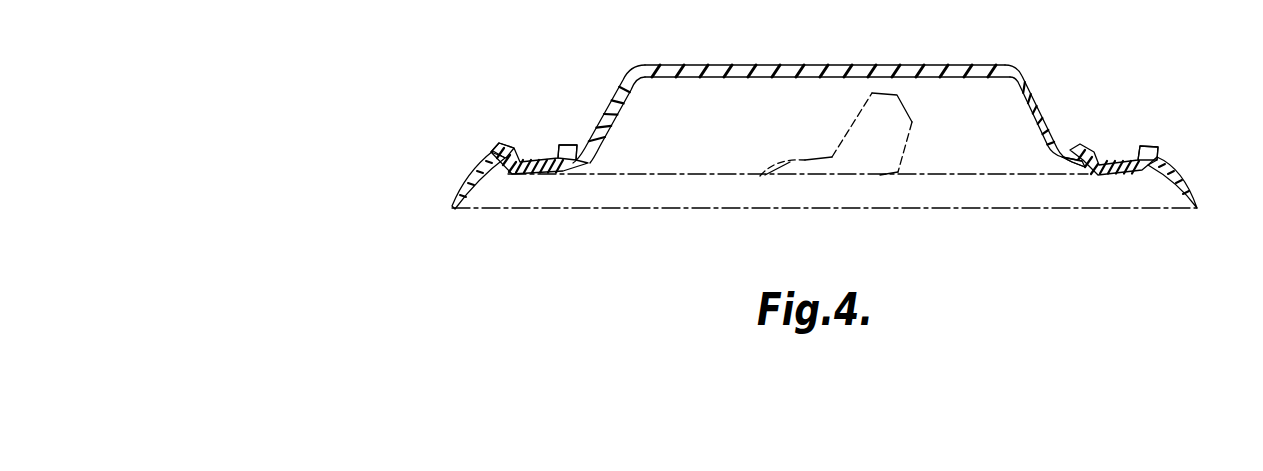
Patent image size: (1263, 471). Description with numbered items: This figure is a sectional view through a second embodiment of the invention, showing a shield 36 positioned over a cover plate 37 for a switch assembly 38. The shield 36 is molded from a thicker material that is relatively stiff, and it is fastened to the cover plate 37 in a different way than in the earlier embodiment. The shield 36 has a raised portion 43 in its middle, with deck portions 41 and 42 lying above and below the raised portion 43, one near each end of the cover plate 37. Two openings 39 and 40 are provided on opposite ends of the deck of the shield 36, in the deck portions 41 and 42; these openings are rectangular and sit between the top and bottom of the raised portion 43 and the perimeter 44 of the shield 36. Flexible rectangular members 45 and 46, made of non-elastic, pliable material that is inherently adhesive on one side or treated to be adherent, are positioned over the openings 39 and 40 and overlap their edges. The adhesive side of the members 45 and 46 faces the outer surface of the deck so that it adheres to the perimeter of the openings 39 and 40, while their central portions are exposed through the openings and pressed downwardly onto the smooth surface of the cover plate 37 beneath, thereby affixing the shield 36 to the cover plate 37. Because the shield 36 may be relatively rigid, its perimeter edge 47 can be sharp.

The shield 36 is at (829, 84).
The cover plate 37 is at (1071, 197).
The switch assembly 38 is at (760, 176).
The opening 39 is at (1087, 170).
The opening 40 is at (508, 165).
The deck portion 41 is at (533, 175).
The deck portion 42 is at (1115, 173).
The raised portion 43 is at (767, 68).
The perimeter 44 is at (1180, 170).
The flexible rectangular member 45 is at (497, 145).
The flexible rectangular member 46 is at (1120, 168).
The perimeter edge 47 is at (452, 207).